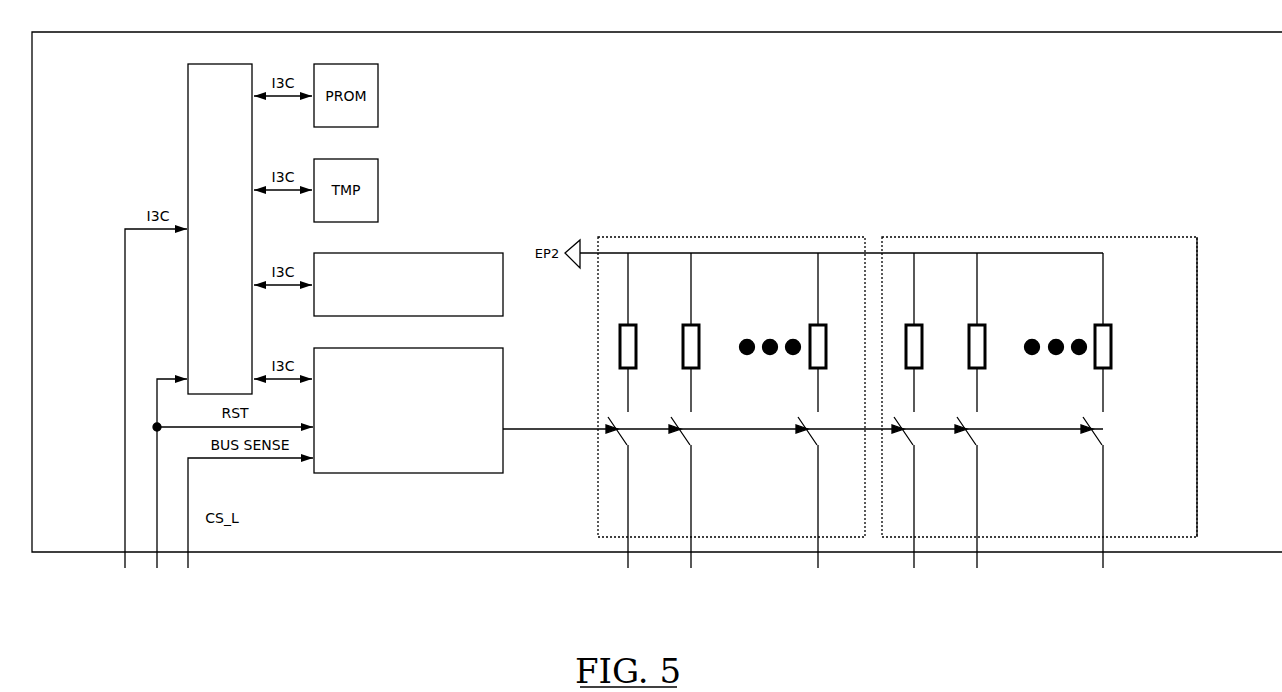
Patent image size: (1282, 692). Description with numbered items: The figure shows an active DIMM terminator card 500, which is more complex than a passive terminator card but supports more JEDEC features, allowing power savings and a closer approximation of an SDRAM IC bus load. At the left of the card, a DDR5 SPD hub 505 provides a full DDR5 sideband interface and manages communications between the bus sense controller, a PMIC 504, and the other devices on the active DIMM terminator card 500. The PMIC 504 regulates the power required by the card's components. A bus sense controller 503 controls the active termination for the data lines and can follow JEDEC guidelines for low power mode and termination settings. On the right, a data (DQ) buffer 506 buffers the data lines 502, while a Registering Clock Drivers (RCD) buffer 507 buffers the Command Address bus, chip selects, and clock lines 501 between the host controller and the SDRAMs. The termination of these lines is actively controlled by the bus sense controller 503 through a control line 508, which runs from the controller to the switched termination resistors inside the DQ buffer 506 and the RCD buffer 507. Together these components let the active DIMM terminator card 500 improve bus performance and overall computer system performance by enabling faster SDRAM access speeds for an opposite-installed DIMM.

The active DIMM terminator card 500 is at (657, 292).
The clock lines 501 is at (1000, 590).
The data lines 502 is at (818, 592).
The bus sense controller 503 is at (408, 410).
The PMIC 504 is at (408, 284).
The DDR5 SPD hub 505 is at (220, 229).
The data (DQ) buffer 506 is at (733, 435).
The Registering Clock Drivers (RCD) buffer 507 is at (1039, 435).
The control line 508 is at (535, 455).